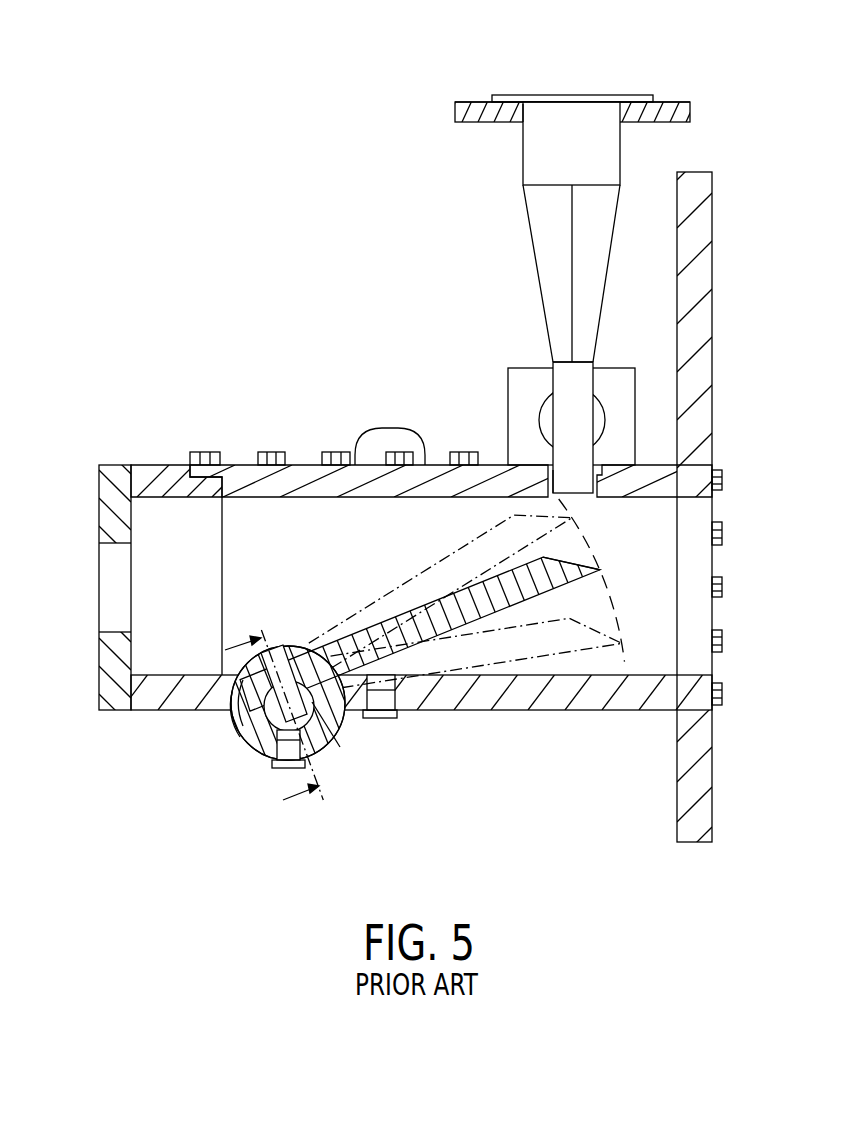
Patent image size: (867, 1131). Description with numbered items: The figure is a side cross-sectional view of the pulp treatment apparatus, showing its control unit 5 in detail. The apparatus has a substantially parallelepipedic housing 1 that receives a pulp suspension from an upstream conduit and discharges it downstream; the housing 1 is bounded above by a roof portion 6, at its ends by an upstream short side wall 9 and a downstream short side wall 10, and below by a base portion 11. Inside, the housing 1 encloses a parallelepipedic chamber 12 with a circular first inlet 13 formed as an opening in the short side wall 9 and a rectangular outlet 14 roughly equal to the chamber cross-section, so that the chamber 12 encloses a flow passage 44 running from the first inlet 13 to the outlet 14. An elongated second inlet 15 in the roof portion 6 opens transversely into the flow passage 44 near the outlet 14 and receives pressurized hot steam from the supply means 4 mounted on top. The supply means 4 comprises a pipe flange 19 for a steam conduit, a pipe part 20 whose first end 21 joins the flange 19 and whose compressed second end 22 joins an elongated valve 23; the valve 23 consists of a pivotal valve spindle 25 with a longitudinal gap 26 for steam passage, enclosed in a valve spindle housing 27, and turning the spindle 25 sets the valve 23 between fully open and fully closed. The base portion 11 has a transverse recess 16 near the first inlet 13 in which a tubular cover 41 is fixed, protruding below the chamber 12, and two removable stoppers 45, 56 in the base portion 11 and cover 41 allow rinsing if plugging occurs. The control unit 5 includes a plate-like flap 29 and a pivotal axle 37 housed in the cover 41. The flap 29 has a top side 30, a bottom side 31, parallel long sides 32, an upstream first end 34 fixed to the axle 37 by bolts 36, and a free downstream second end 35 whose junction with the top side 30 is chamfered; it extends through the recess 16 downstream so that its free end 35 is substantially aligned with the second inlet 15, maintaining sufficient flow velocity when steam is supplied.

The housing 1 is at (409, 479).
The supply means 4 is at (609, 263).
The control unit 5 is at (409, 654).
The roof portion 6 is at (345, 458).
The short side wall 9 is at (103, 497).
The short side wall 10 is at (700, 522).
The base portion 11 is at (502, 712).
The chamber 12 is at (255, 510).
The first inlet 13 is at (105, 575).
The outlet 14 is at (700, 630).
The second inlet 15 is at (578, 490).
The recess 16 is at (232, 697).
The pipe flange 19 is at (488, 103).
The pipe part 20 is at (625, 133).
The first end 21 is at (520, 125).
The second end 22 is at (557, 360).
The valve 23 is at (602, 355).
The valve spindle 25 is at (555, 442).
The longitudinal gap 26 is at (578, 418).
The valve spindle housing 27 is at (618, 437).
The flap 29 is at (390, 619).
The top side 30 is at (333, 647).
The bottom side 31 is at (543, 593).
The long side 32 is at (470, 613).
The first end 34 is at (235, 721).
The second end 35 is at (568, 558).
The bolts 36 is at (268, 645).
The pivotal axle 37 is at (340, 748).
The tubular cover 41 is at (258, 735).
The flow passage 44 is at (315, 520).
The stopper 45 is at (377, 697).
The stopper 56 is at (282, 770).